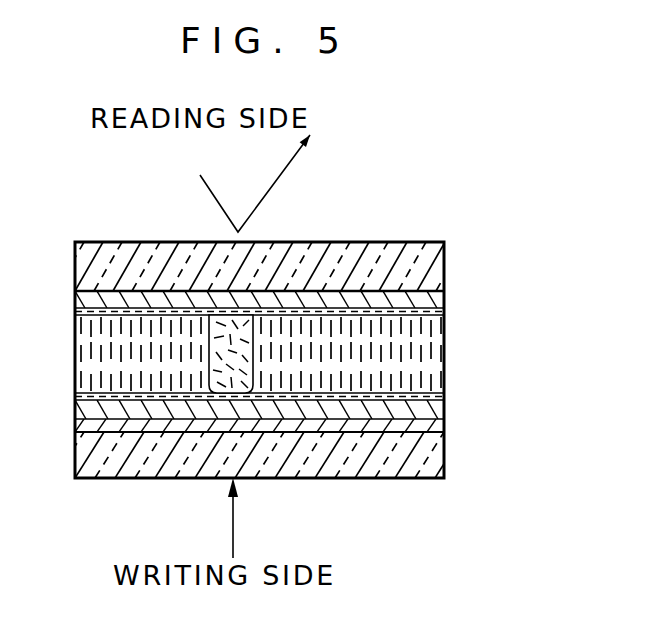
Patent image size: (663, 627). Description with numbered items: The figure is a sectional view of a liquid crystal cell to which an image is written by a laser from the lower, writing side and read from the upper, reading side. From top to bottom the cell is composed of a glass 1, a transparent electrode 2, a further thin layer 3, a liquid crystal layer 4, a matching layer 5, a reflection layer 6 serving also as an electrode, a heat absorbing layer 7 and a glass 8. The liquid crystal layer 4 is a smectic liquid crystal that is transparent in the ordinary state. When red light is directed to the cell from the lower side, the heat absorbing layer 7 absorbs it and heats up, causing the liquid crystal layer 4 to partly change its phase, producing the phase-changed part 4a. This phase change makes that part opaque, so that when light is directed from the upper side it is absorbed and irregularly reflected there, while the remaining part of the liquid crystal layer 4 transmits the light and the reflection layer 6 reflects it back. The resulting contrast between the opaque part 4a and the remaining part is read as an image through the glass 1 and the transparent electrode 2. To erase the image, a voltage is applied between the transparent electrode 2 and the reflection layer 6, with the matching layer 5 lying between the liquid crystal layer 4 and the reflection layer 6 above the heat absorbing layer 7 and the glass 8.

The glass 1 is at (444, 265).
The transparent electrode 2 is at (444, 297).
The protective layer 3 is at (444, 312).
The liquid crystal layer 4 is at (444, 353).
The phase-changed part 4a is at (226, 393).
The matching layer 5 is at (444, 397).
The reflection layer 6 is at (444, 410).
The heat absorbing layer 7 is at (444, 428).
The glass 8 is at (433, 469).